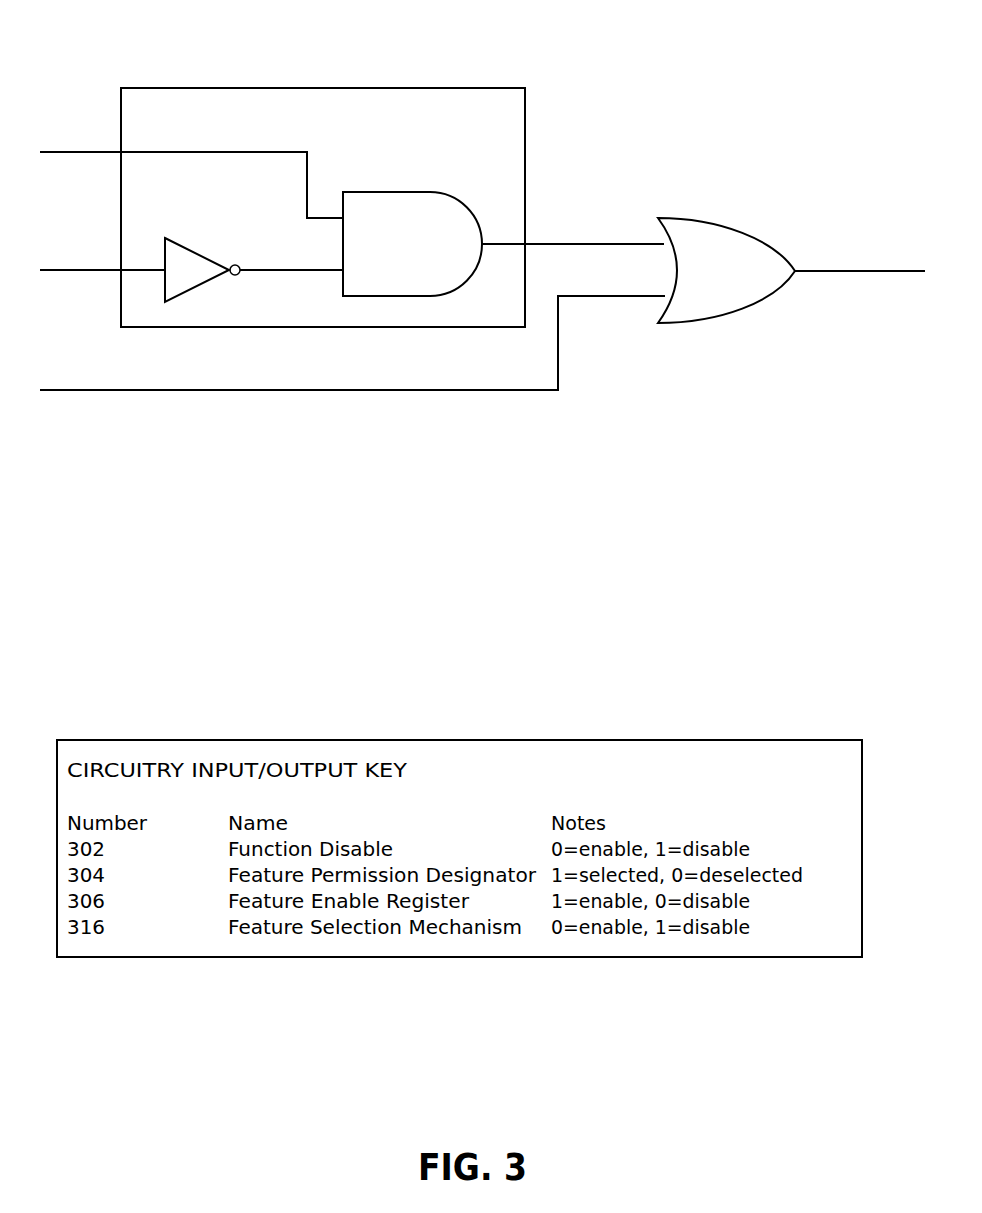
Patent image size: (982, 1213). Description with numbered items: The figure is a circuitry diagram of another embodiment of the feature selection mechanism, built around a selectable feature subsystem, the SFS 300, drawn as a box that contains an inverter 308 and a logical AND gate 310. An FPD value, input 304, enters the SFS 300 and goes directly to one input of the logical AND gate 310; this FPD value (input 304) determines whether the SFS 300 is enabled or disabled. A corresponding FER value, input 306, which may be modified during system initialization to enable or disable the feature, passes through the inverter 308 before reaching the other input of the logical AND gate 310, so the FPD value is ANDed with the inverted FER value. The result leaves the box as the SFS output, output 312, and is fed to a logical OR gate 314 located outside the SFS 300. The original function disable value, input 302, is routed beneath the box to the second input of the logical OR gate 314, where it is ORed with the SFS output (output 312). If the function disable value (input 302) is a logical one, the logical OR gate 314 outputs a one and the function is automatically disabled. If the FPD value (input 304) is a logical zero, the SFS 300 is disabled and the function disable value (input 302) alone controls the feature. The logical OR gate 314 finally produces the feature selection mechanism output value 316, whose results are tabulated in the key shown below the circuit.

The SFS 300 is at (318, 88).
The function disable value input 302 is at (352, 343).
The FPD value input 304 is at (192, 170).
The FER value input 306 is at (102, 255).
The inverter 308 is at (183, 247).
The logical AND gate 310 is at (398, 192).
The SFS output 312 is at (573, 231).
The logical OR gate 314 is at (688, 218).
The feature selection mechanism output value 316 is at (860, 258).